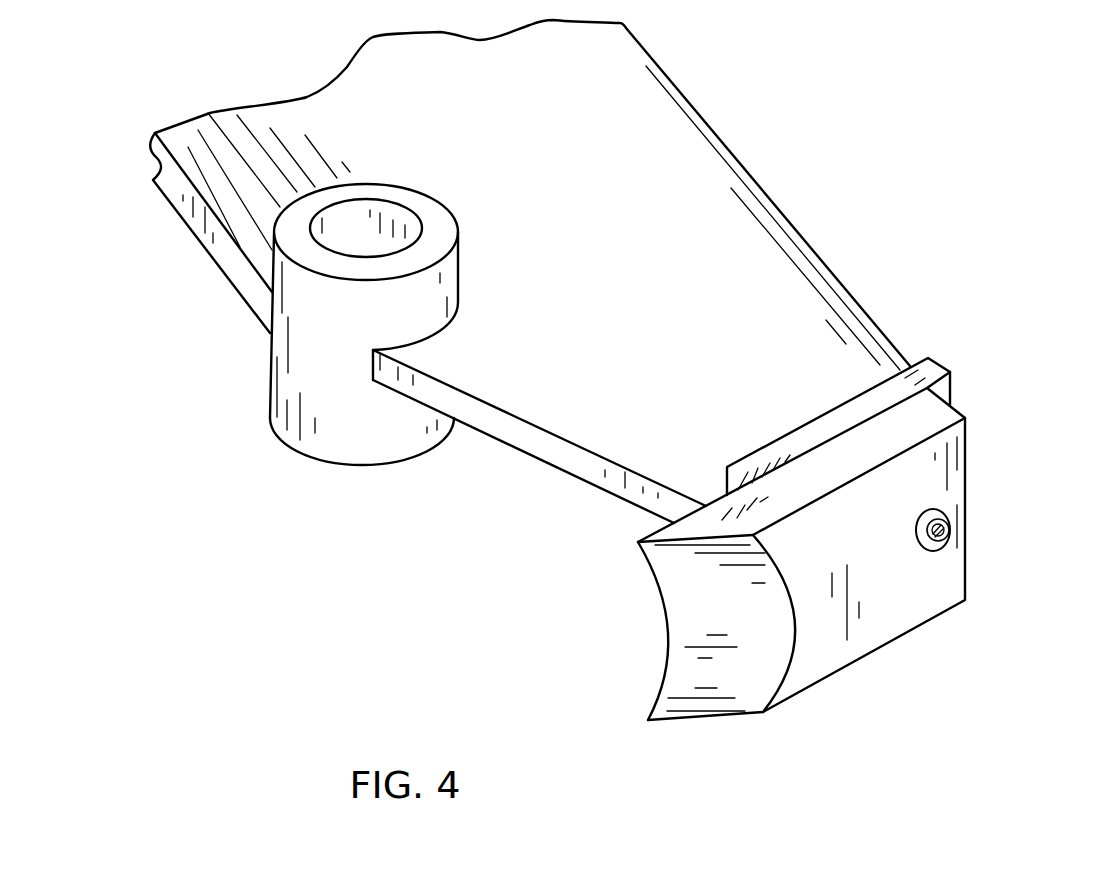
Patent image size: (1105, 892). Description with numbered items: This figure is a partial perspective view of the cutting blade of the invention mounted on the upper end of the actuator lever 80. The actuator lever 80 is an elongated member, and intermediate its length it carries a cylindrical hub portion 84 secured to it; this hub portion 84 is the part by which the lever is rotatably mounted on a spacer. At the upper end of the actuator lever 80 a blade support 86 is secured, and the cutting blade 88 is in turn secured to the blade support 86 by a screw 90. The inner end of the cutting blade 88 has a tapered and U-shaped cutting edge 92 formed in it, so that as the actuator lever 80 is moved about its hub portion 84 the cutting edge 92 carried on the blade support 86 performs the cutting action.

The actuator lever 80 is at (789, 208).
The cylindrical hub portion 84 is at (367, 298).
The blade support 86 is at (930, 357).
The cutting blade 88 is at (950, 458).
The screw 90 is at (948, 522).
The cutting edge 92 is at (690, 605).